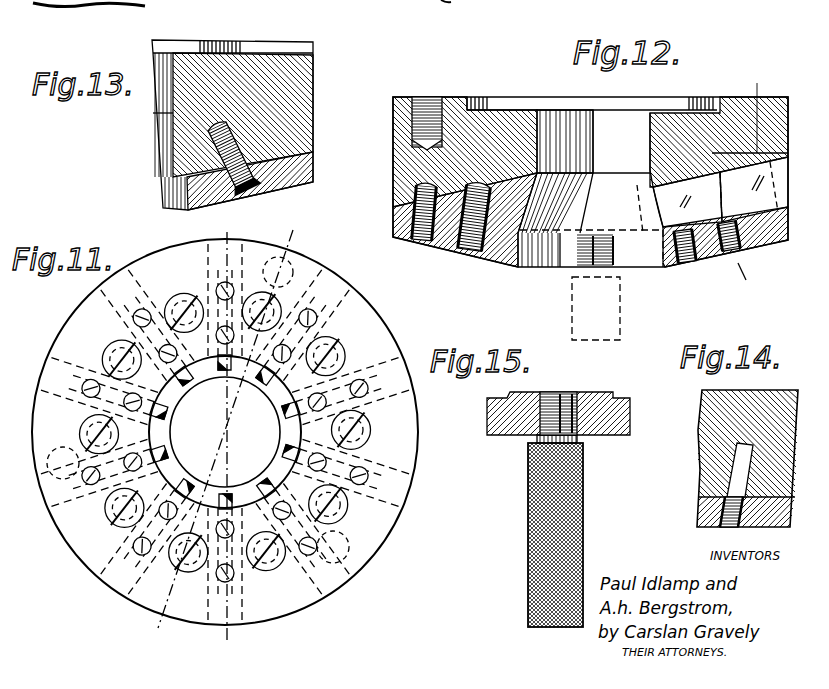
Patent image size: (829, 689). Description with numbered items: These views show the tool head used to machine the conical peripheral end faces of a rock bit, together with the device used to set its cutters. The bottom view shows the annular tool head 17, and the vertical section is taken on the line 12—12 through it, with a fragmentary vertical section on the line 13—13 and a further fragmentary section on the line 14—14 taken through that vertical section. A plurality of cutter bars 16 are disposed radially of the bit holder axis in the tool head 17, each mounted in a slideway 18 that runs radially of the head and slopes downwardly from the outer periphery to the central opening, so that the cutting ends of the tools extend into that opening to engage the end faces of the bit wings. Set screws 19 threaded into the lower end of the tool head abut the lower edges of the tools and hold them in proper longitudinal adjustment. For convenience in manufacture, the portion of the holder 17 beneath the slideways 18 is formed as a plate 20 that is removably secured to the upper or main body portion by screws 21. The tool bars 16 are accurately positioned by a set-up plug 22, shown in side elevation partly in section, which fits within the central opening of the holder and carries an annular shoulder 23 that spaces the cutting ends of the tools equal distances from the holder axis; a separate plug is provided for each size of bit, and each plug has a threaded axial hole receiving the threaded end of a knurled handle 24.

In FIG. 11, the section line 12— 12 is at (285, 228).
In FIG. 11, the section line 13— 13 is at (207, 471).
In FIG. 12, the section line 14— 14 is at (748, 83).
In FIG. 12, the cutter bar 16 is at (637, 185).
In FIG. 13, the tool head 17 is at (300, 87).
In FIG. 12, the tool head 17 is at (737, 97).
In FIG. 11, the tool head 17 is at (363, 558).
In FIG. 14, the tool head 17 is at (713, 420).
In FIG. 12, the slideway 18 is at (754, 189).
In FIG. 11, the slideway 18 is at (52, 380).
In FIG. 14, the slideway 18 is at (737, 463).
In FIG. 12, the set screw 19 is at (727, 258).
In FIG. 11, the set screw 19 is at (318, 321).
In FIG. 14, the set screw 19 is at (727, 530).
In FIG. 13, the plate 20 is at (313, 172).
In FIG. 12, the plate 20 is at (393, 217).
In FIG. 11, the plate 20 is at (400, 521).
In FIG. 14, the plate 20 is at (700, 512).
In FIG. 13, the screw 21 is at (182, 153).
In FIG. 12, the screw 21 is at (474, 255).
In FIG. 11, the screw 21 is at (292, 270).
In FIG. 12, the set-up plug 22 is at (560, 270).
In FIG. 15, the set-up plug 22 is at (495, 436).
In FIG. 12, the annular shoulder 23 is at (687, 199).
In FIG. 15, the annular shoulder 23 is at (613, 397).
In FIG. 12, the knurled handle 24 is at (622, 317).
In FIG. 15, the knurled handle 24 is at (528, 526).